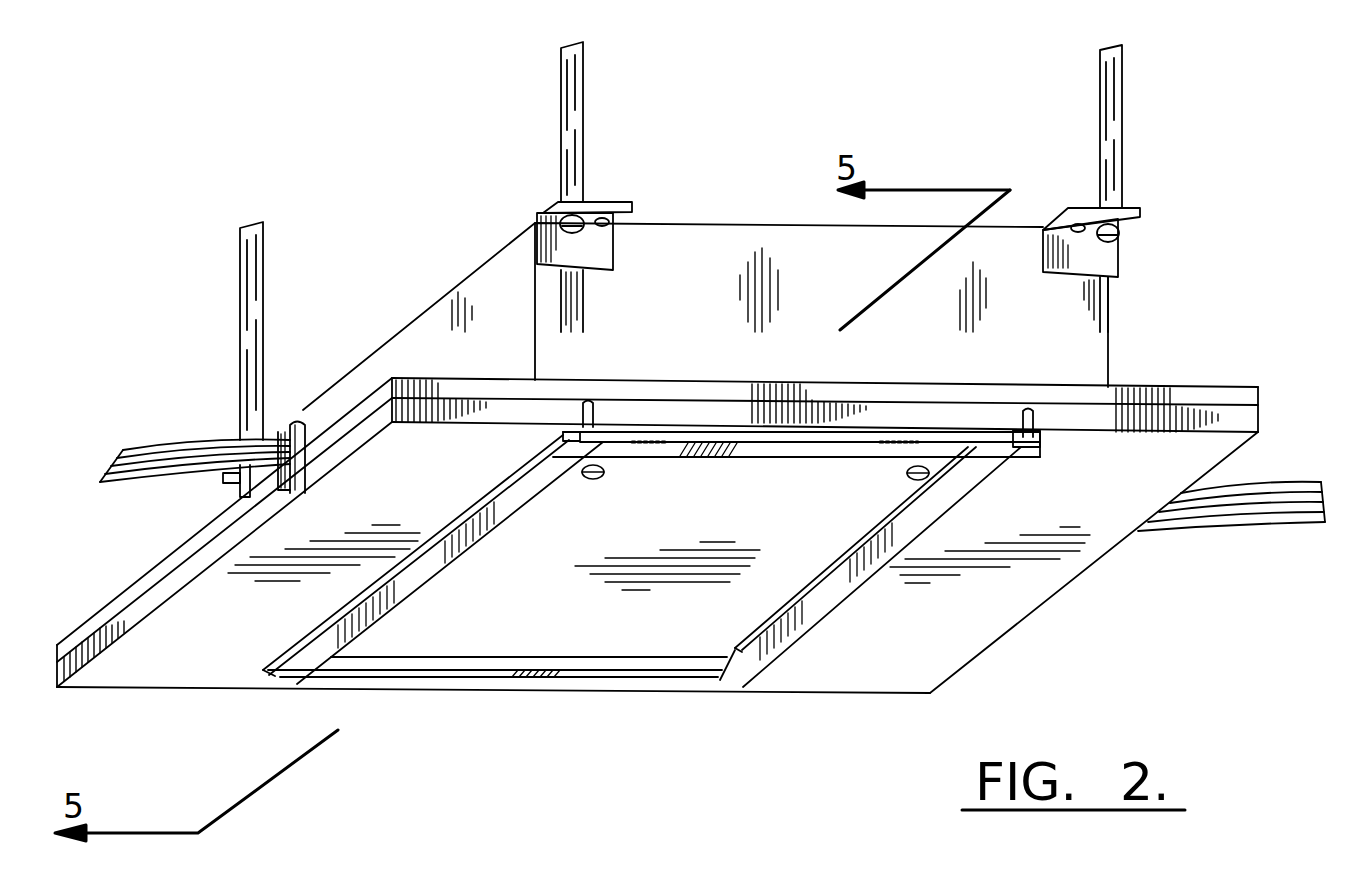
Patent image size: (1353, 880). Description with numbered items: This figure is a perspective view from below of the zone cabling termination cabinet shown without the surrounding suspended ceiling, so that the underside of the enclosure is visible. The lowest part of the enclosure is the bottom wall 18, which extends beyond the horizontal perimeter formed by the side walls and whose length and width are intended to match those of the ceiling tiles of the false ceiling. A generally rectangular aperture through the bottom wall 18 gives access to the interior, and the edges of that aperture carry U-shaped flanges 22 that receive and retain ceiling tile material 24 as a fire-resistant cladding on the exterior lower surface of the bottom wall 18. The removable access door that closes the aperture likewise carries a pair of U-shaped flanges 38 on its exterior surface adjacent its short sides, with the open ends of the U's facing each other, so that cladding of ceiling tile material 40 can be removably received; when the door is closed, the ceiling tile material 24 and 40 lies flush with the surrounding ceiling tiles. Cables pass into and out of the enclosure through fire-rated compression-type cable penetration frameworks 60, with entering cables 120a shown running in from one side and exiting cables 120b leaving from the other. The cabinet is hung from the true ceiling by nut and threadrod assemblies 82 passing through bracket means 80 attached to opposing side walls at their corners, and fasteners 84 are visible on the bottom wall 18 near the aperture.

The bottom wall 18 is at (1185, 402).
The U-shaped flanges 22 is at (660, 452).
The ceiling tile material 24 is at (875, 413).
The U-shaped flanges 38 is at (385, 610).
The ceiling tile material 40 is at (417, 640).
The cable penetration frameworks 60 is at (279, 433).
The bracket means 80 is at (603, 250).
The nut and threadrod assemblies 82 is at (566, 192).
The fasteners 84 is at (596, 479).
The entering cables 120a is at (1240, 520).
The exiting cables 120b is at (183, 448).